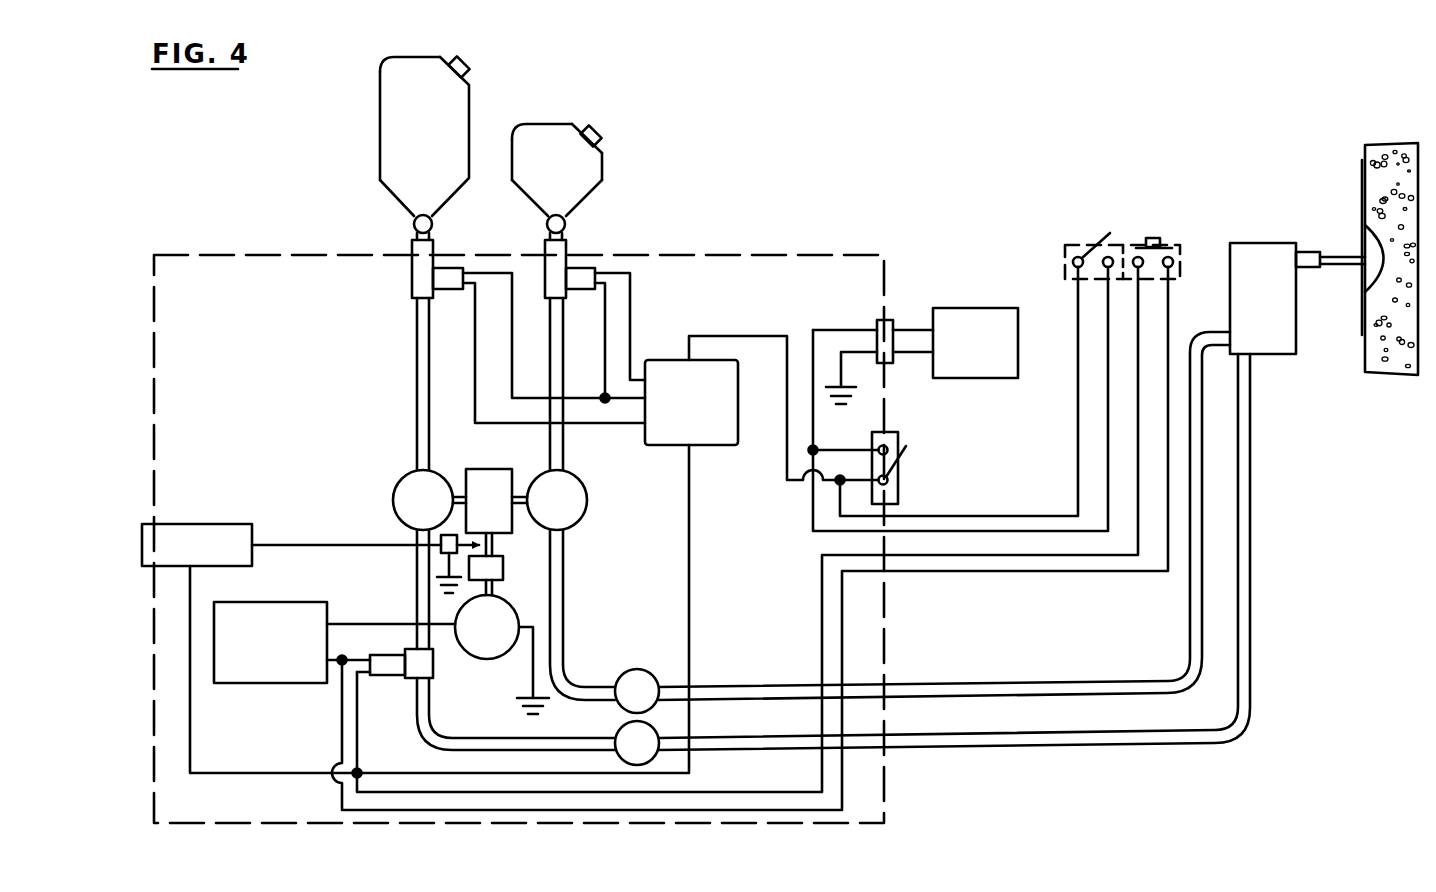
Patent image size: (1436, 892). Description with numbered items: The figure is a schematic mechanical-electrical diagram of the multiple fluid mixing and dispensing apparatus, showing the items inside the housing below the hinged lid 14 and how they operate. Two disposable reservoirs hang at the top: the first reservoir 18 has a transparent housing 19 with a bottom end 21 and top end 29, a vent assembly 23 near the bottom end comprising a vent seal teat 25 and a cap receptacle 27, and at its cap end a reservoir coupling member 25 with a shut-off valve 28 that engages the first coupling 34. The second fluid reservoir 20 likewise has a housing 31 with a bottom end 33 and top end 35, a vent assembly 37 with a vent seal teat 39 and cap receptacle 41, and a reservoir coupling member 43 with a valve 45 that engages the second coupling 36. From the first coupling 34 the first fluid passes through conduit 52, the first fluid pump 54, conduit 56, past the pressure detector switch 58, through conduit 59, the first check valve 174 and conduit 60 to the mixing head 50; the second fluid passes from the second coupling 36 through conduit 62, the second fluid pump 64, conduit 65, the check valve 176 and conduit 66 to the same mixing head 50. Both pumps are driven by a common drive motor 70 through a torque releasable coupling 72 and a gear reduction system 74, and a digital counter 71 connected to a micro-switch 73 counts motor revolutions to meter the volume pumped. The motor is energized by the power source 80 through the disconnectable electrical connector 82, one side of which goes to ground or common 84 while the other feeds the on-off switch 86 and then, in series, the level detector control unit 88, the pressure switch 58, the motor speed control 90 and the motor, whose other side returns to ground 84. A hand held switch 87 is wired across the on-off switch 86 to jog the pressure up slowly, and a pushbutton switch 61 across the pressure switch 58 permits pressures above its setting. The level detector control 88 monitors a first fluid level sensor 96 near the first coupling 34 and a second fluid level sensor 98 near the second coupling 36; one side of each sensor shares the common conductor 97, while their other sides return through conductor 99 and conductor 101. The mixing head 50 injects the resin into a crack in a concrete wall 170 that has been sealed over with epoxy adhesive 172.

The hinged lid 14 is at (262, 252).
The first reservoir 18 is at (410, 136).
The housing 19 is at (380, 132).
The second fluid reservoir 20 is at (545, 172).
The bottom end 21 is at (401, 54).
The vent assembly 23 is at (470, 58).
The reservoir coupling member 25 is at (467, 69).
The cap receptacle 27 is at (451, 58).
The shut-off valve 28 is at (440, 222).
The top end 29 is at (404, 214).
The housing 31 is at (603, 166).
The bottom end 33 is at (534, 123).
The first coupling 34 is at (412, 251).
The top end 35 is at (540, 214).
The second coupling 36 is at (545, 251).
The vent assembly 37 is at (605, 122).
The vent seal teat 39 is at (592, 121).
The cap receptacle 41 is at (604, 143).
The reservoir coupling member 43 is at (574, 229).
The valve 45 is at (572, 222).
The mixing head 50 is at (1256, 243).
The conduit 52 is at (417, 405).
The first fluid pump 54 is at (402, 480).
The conduit 56 is at (417, 606).
The pressure detector switch 58 is at (433, 665).
The conduit 59 is at (485, 738).
The conduit 60 is at (696, 738).
The pushbutton switch 61 is at (1152, 238).
The conduit 62 is at (564, 360).
The second fluid pump 64 is at (580, 481).
The conduit 65 is at (565, 616).
The conduit 66 is at (735, 687).
The drive motor 70 is at (505, 606).
The digital counter 71 is at (192, 524).
The torque releasable coupling 72 is at (503, 565).
The micro-switch 73 is at (441, 540).
The gear reduction system 74 is at (500, 468).
The power source 80 is at (1018, 352).
The disconnectable electrical connector 82 is at (889, 363).
The ground or common 84 is at (437, 577).
The on-off switch 86 is at (900, 461).
The hand held switch 87 is at (1100, 240).
The level detector control unit 88 is at (738, 411).
The motor speed control 90 is at (268, 602).
The first fluid level sensor 96 is at (441, 268).
The conductor 97 is at (513, 360).
The second fluid level sensor 98 is at (580, 268).
The conductor 99 is at (475, 382).
The conductor 101 is at (632, 290).
The concrete wall 170 is at (1375, 145).
The epoxy adhesive 172 is at (1356, 181).
The first check valve 174 is at (618, 757).
The check valve 176 is at (625, 669).